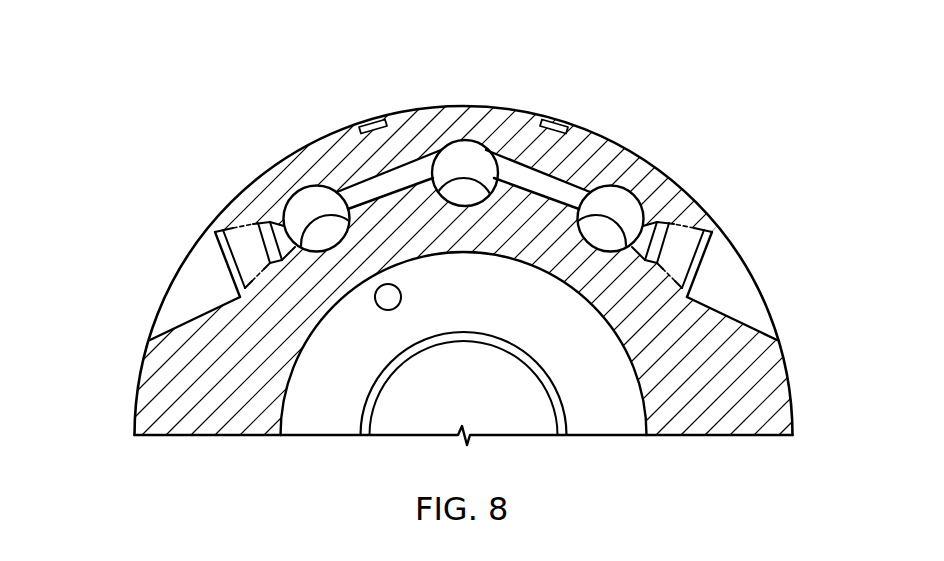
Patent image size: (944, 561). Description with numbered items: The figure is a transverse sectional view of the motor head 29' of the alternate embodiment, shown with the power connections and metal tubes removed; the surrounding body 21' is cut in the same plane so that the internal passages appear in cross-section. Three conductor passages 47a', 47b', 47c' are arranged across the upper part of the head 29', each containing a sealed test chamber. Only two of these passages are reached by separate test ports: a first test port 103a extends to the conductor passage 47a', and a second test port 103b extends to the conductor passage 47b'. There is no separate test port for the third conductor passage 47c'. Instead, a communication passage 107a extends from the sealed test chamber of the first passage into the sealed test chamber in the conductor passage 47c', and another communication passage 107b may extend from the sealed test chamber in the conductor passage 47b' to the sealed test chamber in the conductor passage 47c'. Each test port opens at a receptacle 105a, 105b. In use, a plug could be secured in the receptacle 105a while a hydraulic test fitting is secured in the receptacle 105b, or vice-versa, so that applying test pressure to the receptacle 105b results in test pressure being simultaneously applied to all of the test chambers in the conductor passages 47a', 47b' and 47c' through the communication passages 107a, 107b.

The housing body 21' is at (422, 275).
The head 29' is at (496, 268).
The conductor passage 47a' is at (263, 194).
The conductor passage 47b' is at (646, 187).
The conductor passage 47c' is at (420, 152).
The test port 103a is at (268, 215).
The test port 103b is at (658, 208).
The receptacle 105a is at (228, 252).
The receptacle 105b is at (705, 246).
The communication passage 107a is at (397, 179).
The communication passage 107b is at (539, 183).